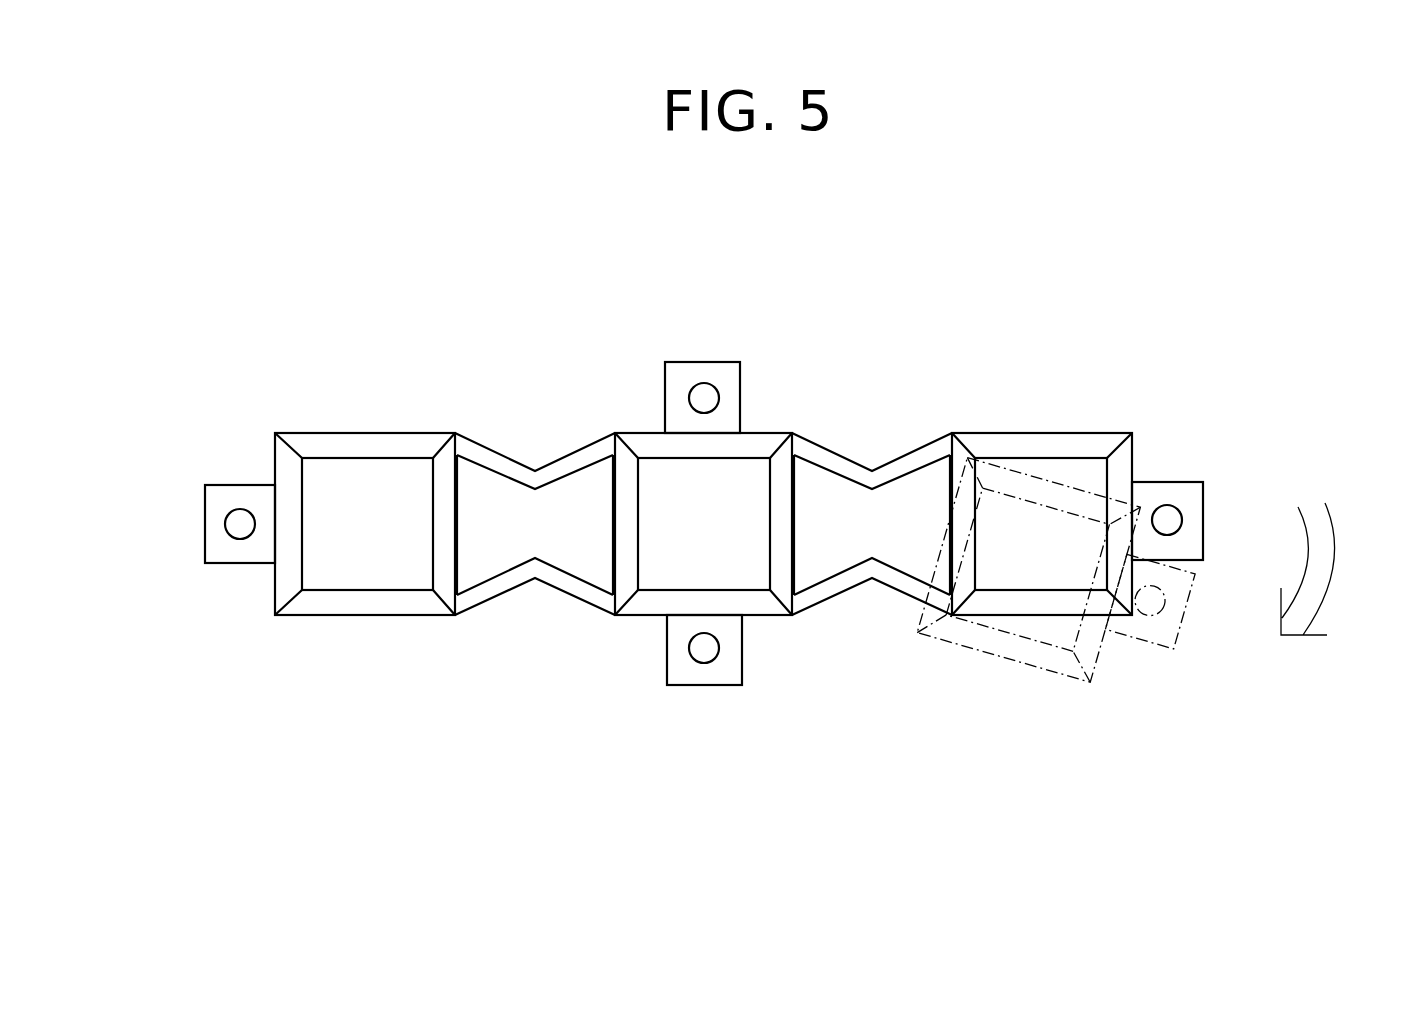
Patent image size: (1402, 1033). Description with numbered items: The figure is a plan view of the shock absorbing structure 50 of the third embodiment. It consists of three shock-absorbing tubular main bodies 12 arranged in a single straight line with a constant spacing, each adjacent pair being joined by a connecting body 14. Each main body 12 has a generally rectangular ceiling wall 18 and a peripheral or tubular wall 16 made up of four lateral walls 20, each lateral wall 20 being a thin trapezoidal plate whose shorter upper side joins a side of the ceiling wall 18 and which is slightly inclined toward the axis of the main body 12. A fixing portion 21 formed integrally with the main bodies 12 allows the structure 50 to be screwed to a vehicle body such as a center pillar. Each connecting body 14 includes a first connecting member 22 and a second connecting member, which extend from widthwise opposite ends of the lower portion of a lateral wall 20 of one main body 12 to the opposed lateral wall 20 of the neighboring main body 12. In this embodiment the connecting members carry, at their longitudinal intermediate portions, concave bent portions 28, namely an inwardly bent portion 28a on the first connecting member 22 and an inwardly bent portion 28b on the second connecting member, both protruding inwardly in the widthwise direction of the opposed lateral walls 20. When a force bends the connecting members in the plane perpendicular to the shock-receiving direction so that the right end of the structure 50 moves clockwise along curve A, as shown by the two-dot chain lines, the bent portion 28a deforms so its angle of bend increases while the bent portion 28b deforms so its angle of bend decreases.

The shock absorbing structure 50 is at (253, 393).
The shock-absorbing tubular main body 12 is at (706, 533).
The connecting body 14 is at (693, 546).
The peripheral or tubular wall 16 is at (393, 620).
The ceiling wall 18 is at (327, 468).
The lateral wall 20 is at (343, 445).
The fixing portion 21 is at (217, 495).
The first connecting member 22 is at (483, 455).
The lower band of connecting link 28 is at (487, 593).
The concave bent portion 28a is at (538, 477).
The concave bent portion 28b is at (537, 573).